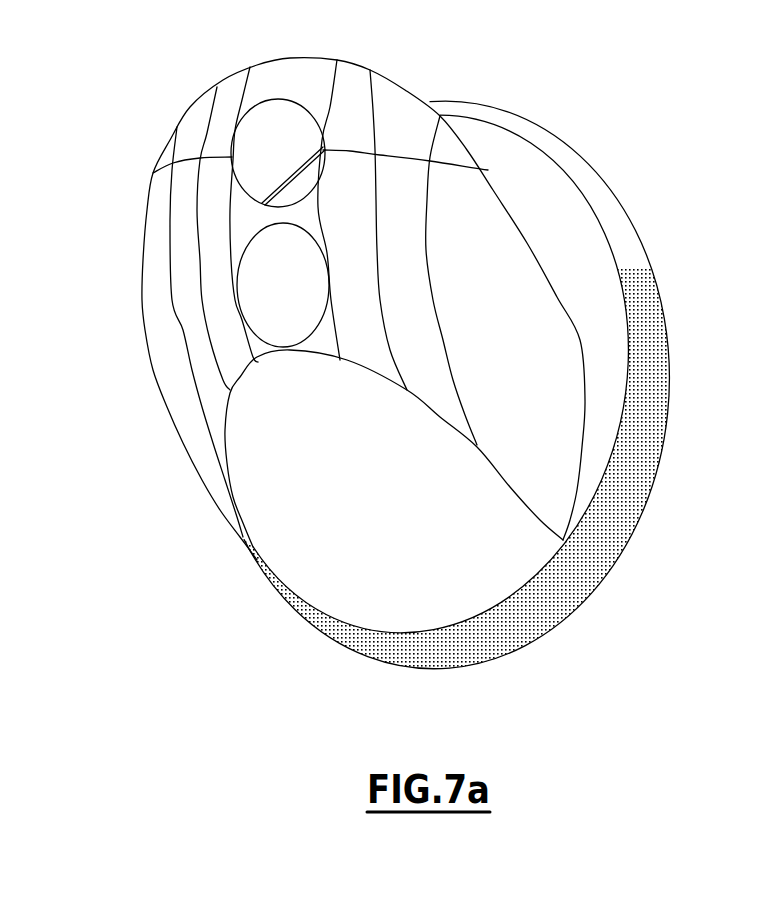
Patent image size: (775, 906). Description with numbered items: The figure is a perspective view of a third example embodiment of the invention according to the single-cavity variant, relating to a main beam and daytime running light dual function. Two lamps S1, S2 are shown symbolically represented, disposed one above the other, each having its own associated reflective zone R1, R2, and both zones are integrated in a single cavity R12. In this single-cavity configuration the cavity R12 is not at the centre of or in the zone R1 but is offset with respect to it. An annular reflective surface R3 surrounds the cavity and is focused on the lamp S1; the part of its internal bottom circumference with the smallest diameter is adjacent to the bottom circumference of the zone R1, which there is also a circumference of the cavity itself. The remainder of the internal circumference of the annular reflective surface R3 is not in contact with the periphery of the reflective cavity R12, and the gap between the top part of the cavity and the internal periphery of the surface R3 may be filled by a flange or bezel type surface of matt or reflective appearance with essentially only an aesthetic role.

The reflective zone R1 is at (393, 522).
The reflective zone R2 is at (432, 296).
The reflective surface R3 is at (650, 392).
The single cavity R12 is at (172, 505).
The lamp S1 is at (300, 307).
The lamp S2 is at (300, 175).